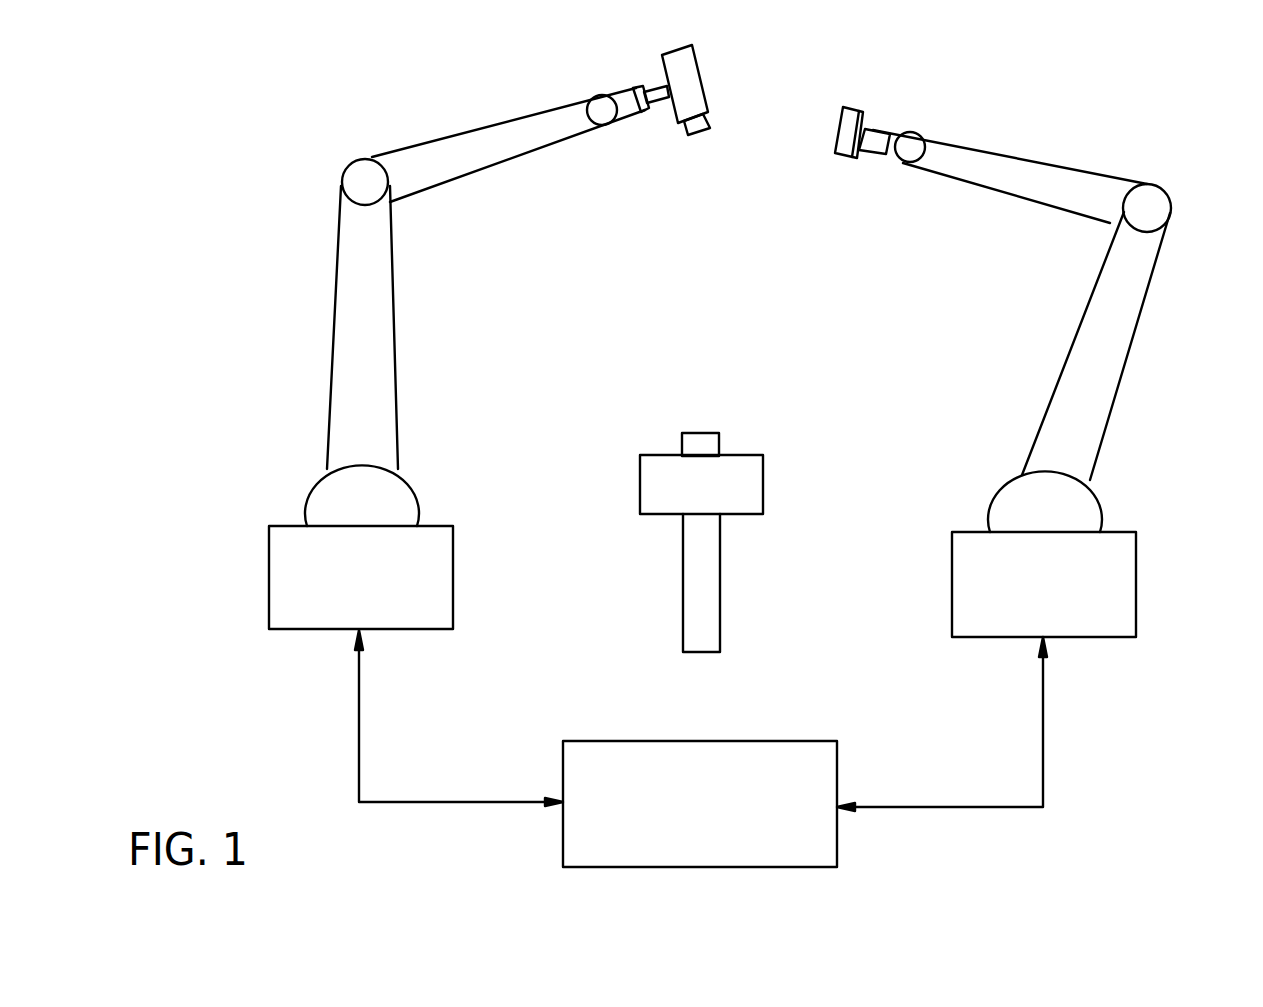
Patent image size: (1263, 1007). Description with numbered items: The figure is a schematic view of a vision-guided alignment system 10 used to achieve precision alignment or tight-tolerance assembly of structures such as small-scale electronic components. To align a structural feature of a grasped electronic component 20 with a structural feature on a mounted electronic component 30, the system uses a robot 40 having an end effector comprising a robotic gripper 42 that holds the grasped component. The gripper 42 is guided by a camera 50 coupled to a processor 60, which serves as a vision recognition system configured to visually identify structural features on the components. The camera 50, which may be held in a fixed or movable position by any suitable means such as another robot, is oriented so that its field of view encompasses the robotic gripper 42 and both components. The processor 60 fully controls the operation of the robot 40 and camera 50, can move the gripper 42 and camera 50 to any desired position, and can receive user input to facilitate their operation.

The vision-guided alignment system 10 is at (758, 448).
The grasped electronic component 20 is at (842, 130).
The mounted electronic component 30 is at (702, 440).
The robot 40 is at (1120, 368).
The robotic gripper 42 is at (868, 117).
The camera 50 is at (678, 62).
The processor 60 is at (720, 753).